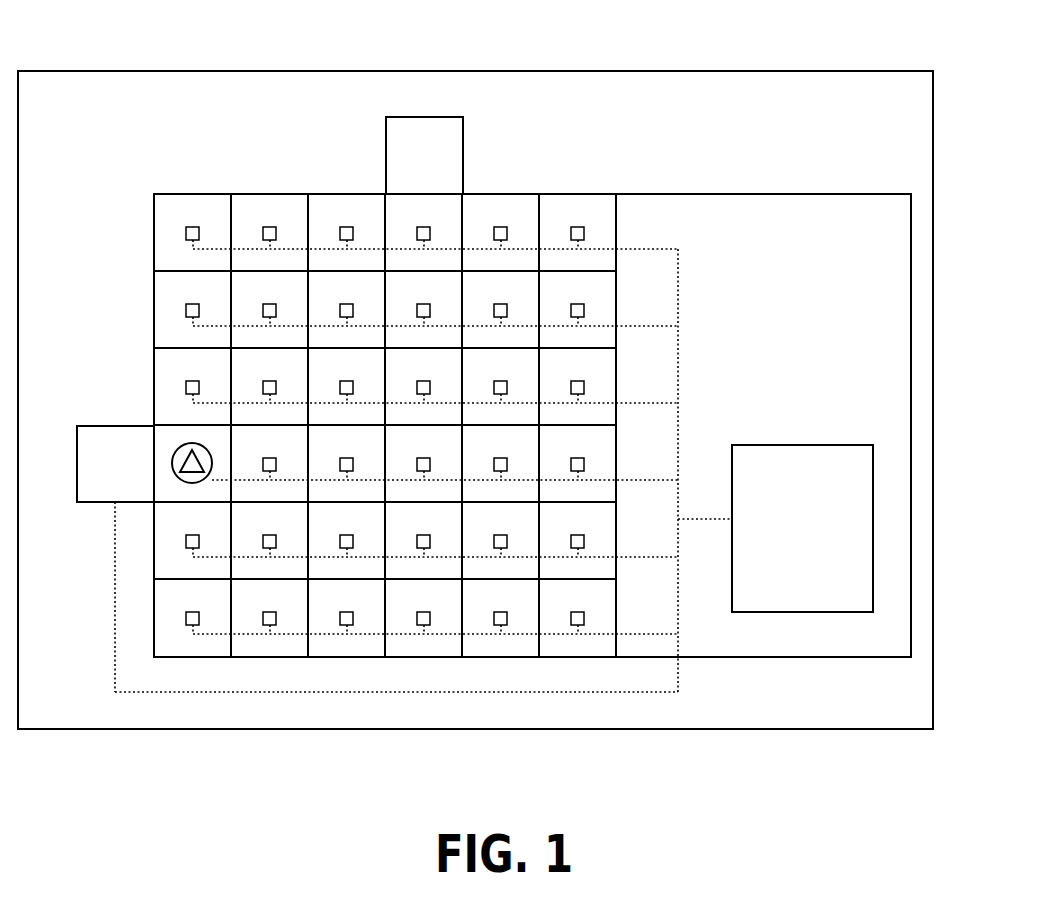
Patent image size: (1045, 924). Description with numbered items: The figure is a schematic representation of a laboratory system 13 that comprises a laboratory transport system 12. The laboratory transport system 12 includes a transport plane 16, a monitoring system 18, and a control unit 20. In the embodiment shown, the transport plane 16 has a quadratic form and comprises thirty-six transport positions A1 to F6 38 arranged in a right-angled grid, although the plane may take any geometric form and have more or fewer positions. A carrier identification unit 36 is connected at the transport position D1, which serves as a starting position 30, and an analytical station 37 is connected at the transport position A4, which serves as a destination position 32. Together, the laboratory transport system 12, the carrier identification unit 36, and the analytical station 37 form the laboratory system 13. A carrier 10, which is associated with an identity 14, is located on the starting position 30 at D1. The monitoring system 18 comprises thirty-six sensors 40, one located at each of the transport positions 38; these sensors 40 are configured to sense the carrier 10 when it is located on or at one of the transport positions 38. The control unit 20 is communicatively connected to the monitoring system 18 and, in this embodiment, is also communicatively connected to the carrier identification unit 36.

The carrier 10 is at (192, 477).
The laboratory transport system 12 is at (797, 193).
The laboratory system 13 is at (730, 70).
The identity 14 is at (187, 460).
The transport plane 16 is at (153, 636).
The monitoring system 18 is at (678, 282).
The control unit 20 is at (810, 470).
The starting position 30 is at (157, 430).
The destination position 32 is at (388, 198).
The carrier identification unit 36 is at (92, 460).
The analytical station 37 is at (450, 163).
The transport positions 38 is at (163, 232).
The sensors 40 is at (583, 232).